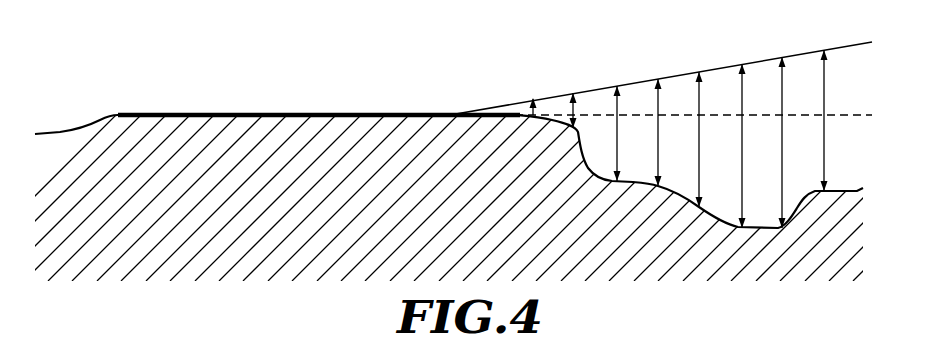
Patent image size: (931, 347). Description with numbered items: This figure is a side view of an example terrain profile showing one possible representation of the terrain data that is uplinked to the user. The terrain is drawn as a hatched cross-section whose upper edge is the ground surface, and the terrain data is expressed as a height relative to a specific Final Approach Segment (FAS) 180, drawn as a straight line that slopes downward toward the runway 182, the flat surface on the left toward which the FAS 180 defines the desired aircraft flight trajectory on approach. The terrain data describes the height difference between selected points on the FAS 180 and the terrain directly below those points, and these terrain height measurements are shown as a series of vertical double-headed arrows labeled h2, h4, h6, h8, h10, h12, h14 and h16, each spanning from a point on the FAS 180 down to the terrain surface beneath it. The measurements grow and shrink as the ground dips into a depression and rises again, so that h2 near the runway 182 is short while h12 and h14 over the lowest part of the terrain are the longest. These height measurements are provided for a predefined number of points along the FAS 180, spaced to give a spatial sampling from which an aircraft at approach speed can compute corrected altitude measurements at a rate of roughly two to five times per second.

The Final Approach Segment (FAS) 180 is at (492, 108).
The runway 182 is at (235, 113).
The terrain height measurement h2 is at (531, 92).
The terrain height measurement h4 is at (572, 95).
The terrain height measurement h6 is at (615, 118).
The terrain height measurement h8 is at (656, 117).
The terrain height measurement h10 is at (697, 123).
The terrain height measurement h12 is at (740, 131).
The terrain height measurement h14 is at (782, 127).
The terrain height measurement h16 is at (823, 105).